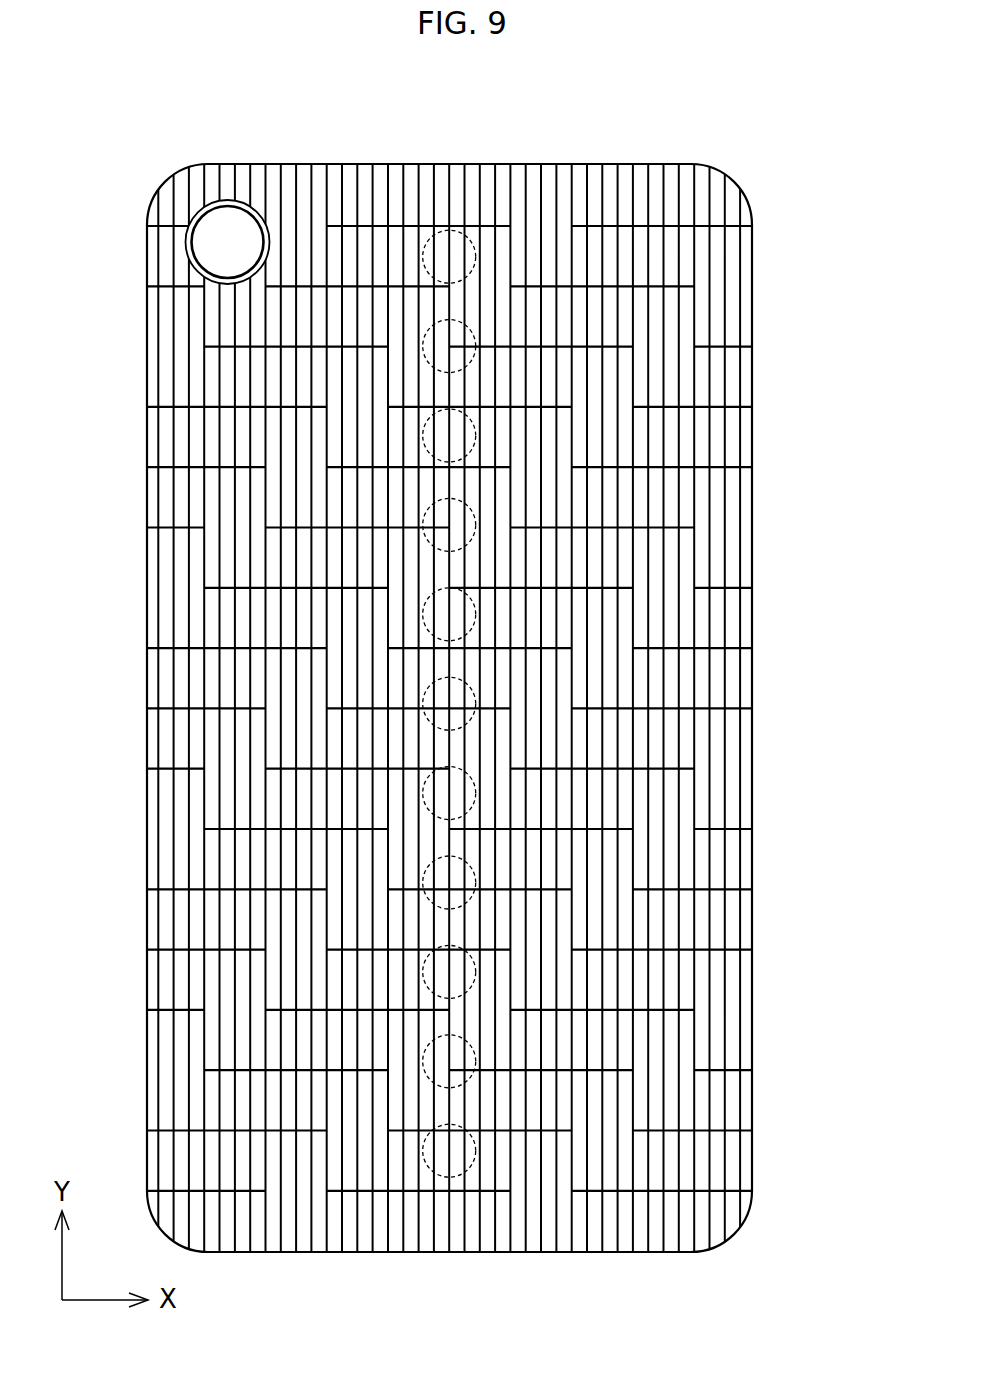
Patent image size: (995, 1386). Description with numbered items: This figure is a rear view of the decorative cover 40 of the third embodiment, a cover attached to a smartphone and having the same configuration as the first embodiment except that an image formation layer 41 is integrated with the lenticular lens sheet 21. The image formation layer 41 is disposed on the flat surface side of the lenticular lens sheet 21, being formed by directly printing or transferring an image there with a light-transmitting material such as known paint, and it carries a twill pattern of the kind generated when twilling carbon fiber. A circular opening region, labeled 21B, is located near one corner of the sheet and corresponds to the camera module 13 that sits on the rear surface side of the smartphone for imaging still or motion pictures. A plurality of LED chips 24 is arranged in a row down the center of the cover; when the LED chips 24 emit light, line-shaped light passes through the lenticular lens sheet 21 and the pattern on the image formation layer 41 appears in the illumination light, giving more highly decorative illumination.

The camera module 13 is at (217, 225).
The decorative cover 40 is at (440, 163).
The lenticular lens sheet 21 is at (522, 183).
The image formation layer 41 is at (718, 267).
The ring electrode around hole 21B is at (195, 258).
The LED chips 24 is at (423, 972).